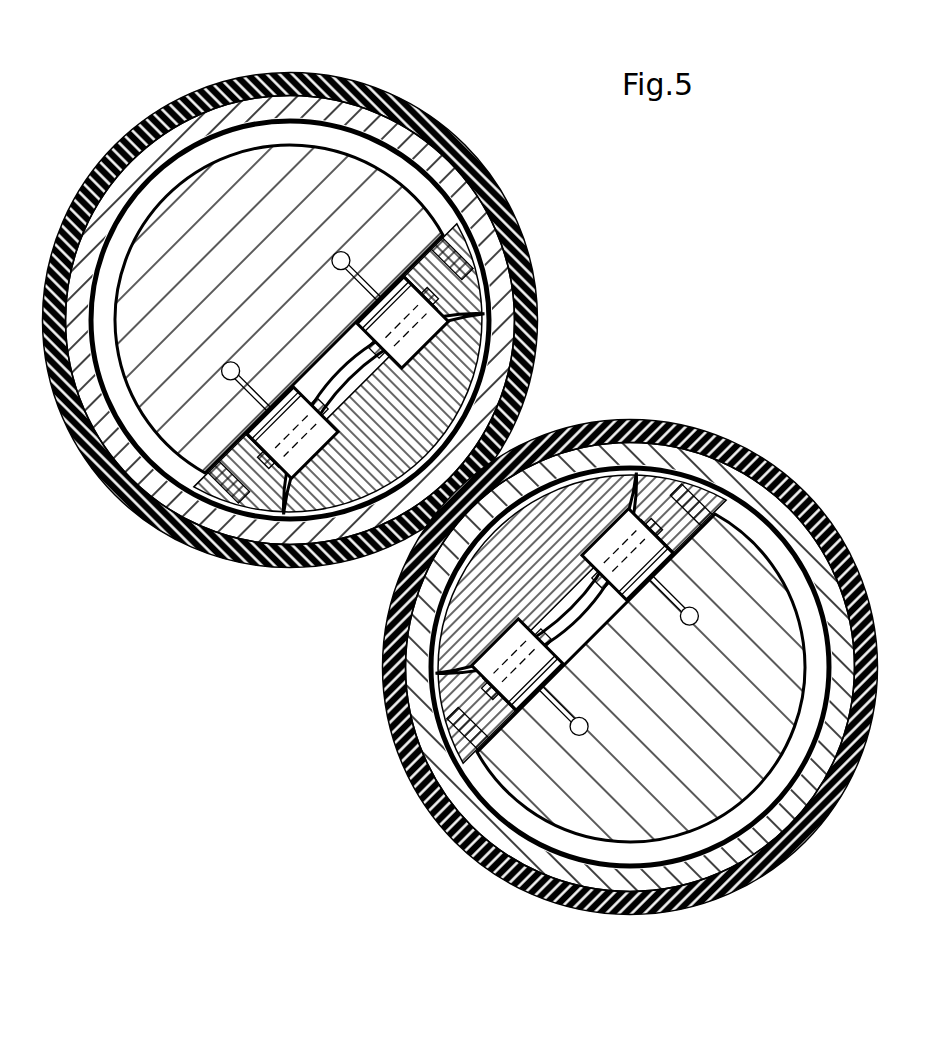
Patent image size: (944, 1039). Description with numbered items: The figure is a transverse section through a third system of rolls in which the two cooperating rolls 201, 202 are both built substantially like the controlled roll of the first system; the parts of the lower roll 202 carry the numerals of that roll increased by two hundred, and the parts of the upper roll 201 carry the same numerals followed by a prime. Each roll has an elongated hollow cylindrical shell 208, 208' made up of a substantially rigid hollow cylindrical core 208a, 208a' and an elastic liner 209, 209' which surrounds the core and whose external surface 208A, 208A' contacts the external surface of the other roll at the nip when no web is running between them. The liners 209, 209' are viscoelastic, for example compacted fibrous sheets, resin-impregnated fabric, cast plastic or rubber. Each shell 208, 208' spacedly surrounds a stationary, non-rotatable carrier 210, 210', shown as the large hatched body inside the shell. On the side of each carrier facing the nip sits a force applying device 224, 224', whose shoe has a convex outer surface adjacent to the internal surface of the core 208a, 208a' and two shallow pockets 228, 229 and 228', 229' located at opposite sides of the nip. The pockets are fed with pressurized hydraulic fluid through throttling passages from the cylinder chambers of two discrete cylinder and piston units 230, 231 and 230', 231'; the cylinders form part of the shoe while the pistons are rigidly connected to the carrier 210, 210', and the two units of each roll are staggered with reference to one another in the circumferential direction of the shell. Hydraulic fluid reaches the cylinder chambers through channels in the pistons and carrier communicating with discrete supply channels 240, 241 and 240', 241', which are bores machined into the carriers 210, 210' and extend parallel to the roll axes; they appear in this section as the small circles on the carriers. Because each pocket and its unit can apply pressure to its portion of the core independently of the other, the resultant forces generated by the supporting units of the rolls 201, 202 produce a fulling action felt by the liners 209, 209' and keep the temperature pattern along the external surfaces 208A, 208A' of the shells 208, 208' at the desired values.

The roll 201 is at (320, 335).
The roll 202 is at (612, 667).
The shell 208 is at (612, 667).
The shell 208' is at (320, 335).
The core 208a is at (628, 667).
The core 208a' is at (303, 320).
The external surface 208A is at (630, 667).
The external surface 208A' is at (290, 320).
The elastic liner 209 is at (630, 667).
The elastic liner 209' is at (296, 320).
The carrier 210 is at (674, 724).
The carrier 210' is at (245, 271).
The force applying device 224 is at (531, 631).
The force applying device 224' is at (386, 338).
The pocket 228 is at (511, 595).
The pocket 228' is at (362, 441).
The pocket 229 is at (544, 574).
The pocket 229' is at (394, 405).
The cylinder and piston unit 230 is at (456, 665).
The cylinder and piston unit 230' is at (273, 487).
The cylinder and piston unit 231 is at (644, 496).
The cylinder and piston unit 231' is at (466, 302).
The supply channel 240 is at (575, 724).
The supply channel 240' is at (231, 369).
The supply channel 241 is at (700, 604).
The supply channel 241' is at (337, 260).